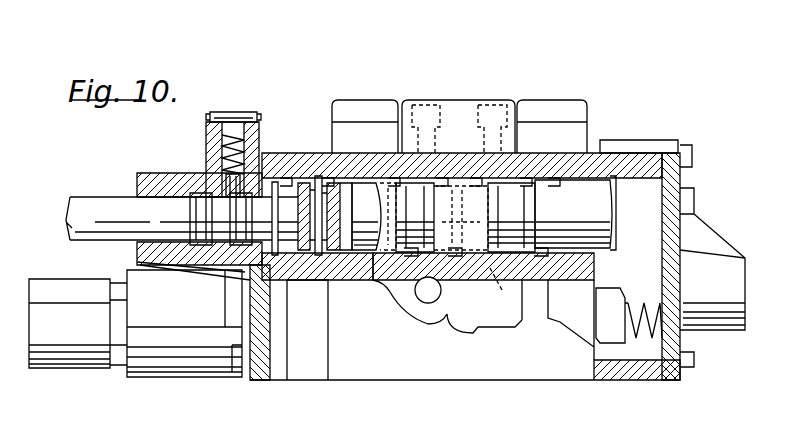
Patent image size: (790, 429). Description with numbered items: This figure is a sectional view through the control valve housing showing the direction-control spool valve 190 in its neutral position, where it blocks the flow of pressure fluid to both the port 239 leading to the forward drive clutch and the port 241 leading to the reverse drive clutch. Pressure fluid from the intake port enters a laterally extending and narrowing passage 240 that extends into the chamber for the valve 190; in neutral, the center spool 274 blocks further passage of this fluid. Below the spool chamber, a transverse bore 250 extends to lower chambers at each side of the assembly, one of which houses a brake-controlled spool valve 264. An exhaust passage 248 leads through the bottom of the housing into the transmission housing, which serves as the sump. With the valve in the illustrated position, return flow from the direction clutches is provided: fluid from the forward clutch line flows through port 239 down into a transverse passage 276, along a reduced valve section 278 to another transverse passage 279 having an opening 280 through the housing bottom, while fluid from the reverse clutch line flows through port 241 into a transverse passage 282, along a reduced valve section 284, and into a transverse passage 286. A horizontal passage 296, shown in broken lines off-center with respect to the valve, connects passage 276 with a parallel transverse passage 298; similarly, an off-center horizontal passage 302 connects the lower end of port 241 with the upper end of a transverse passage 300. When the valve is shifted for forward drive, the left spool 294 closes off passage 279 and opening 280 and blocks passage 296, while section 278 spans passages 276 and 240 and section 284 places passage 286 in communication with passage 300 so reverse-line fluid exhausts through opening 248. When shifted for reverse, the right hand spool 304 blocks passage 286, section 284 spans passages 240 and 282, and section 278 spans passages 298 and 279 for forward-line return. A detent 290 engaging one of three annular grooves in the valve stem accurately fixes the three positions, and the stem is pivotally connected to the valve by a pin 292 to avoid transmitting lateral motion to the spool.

The spool valve 190 is at (118, 206).
The detent 290 is at (220, 184).
The spool 294 is at (350, 182).
The horizontal passage 296 is at (358, 150).
The transverse passage 279 is at (394, 185).
The transverse passage 298 is at (366, 216).
The reduced valve section 278 is at (365, 229).
The port 239 is at (421, 112).
The port 241 is at (495, 112).
The center spool 274 is at (476, 184).
The horizontal passage 302 is at (522, 178).
The transverse passage 286 is at (534, 182).
The transverse passage 300 is at (596, 156).
The reduced valve section 284 is at (532, 212).
The right hand spool 304 is at (600, 212).
The pin 292 is at (301, 255).
The opening 280 is at (392, 266).
The transverse bore 250 is at (426, 300).
The transverse passage 276 is at (481, 322).
The passage 240 is at (470, 255).
The transverse passage 282 is at (492, 270).
The exhaust passage 248 is at (528, 296).
The brake-controlled spool valve 264 is at (74, 378).